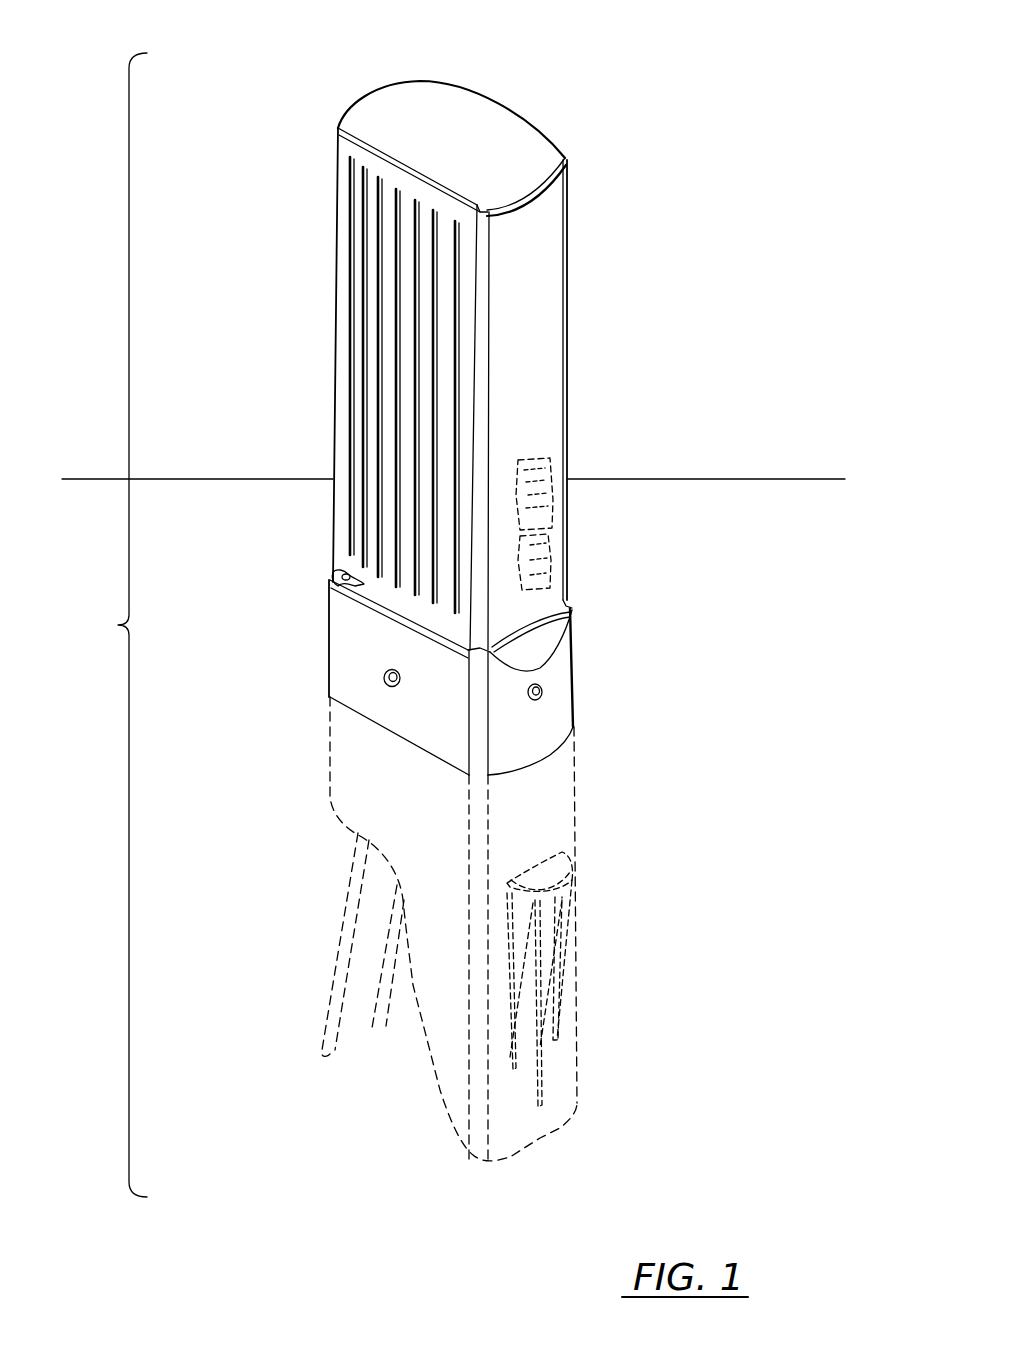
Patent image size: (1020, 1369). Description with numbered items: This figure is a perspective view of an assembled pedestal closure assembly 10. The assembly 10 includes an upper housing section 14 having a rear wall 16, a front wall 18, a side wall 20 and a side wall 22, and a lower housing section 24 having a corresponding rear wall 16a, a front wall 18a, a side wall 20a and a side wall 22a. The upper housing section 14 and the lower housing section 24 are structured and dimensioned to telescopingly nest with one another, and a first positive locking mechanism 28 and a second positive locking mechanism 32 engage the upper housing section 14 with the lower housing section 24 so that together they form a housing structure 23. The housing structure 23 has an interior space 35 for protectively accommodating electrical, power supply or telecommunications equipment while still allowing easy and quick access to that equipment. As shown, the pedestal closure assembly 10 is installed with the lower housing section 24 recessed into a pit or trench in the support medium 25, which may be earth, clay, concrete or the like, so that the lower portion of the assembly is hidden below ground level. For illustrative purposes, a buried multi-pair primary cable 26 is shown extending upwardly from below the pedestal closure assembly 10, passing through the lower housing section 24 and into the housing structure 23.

The pedestal closure assembly 10 is at (433, 581).
The upper housing section 14 is at (460, 325).
The rear wall 16 is at (530, 388).
The front wall 18 is at (336, 222).
The side wall 20 is at (372, 318).
The side wall 22 is at (566, 279).
The housing structure 23 is at (111, 625).
The lower housing section 24 is at (572, 990).
The support medium 25 is at (429, 643).
The buried multi-pair primary cable 26 is at (393, 995).
The first positive locking mechanism 28 is at (330, 577).
The second positive locking mechanism 32 is at (545, 558).
The interior space 35 is at (413, 135).
The rear wall 16a is at (545, 813).
The front wall 18a is at (330, 612).
The side wall 20a is at (355, 775).
The side wall 22a is at (575, 655).